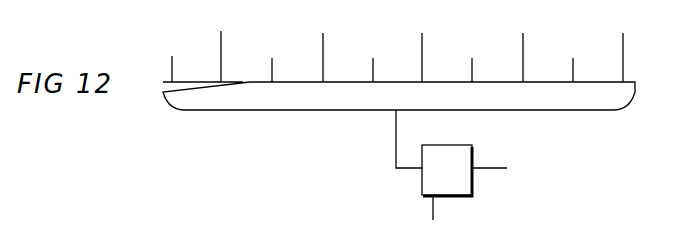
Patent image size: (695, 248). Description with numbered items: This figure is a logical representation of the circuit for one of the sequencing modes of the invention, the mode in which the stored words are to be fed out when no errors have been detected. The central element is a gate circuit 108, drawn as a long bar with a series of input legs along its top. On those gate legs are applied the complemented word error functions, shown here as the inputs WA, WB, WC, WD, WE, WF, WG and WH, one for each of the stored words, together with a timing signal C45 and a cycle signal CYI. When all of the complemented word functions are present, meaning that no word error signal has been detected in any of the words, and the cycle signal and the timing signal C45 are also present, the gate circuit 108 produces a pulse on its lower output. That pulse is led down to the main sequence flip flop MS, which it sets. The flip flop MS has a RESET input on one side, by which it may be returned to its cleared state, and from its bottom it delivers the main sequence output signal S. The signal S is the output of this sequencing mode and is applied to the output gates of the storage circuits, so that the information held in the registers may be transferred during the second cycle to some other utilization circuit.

The gate circuit 108 is at (633, 97).
The timing signal C45 is at (170, 60).
The CYI input signal CYI is at (218, 48).
The WA input signal WA is at (281, 37).
The WB input signal WB is at (334, 13).
The WC input signal WC is at (382, 37).
The WD input signal WD is at (436, 13).
The WE input signal WE is at (483, 37).
The WF input signal WF is at (537, 13).
The WG input signal WG is at (585, 37).
The WH input signal WH is at (633, 13).
The main sequence flip flop MS is at (434, 153).
The reset output RESET is at (513, 169).
The main sequence output signal S is at (432, 218).